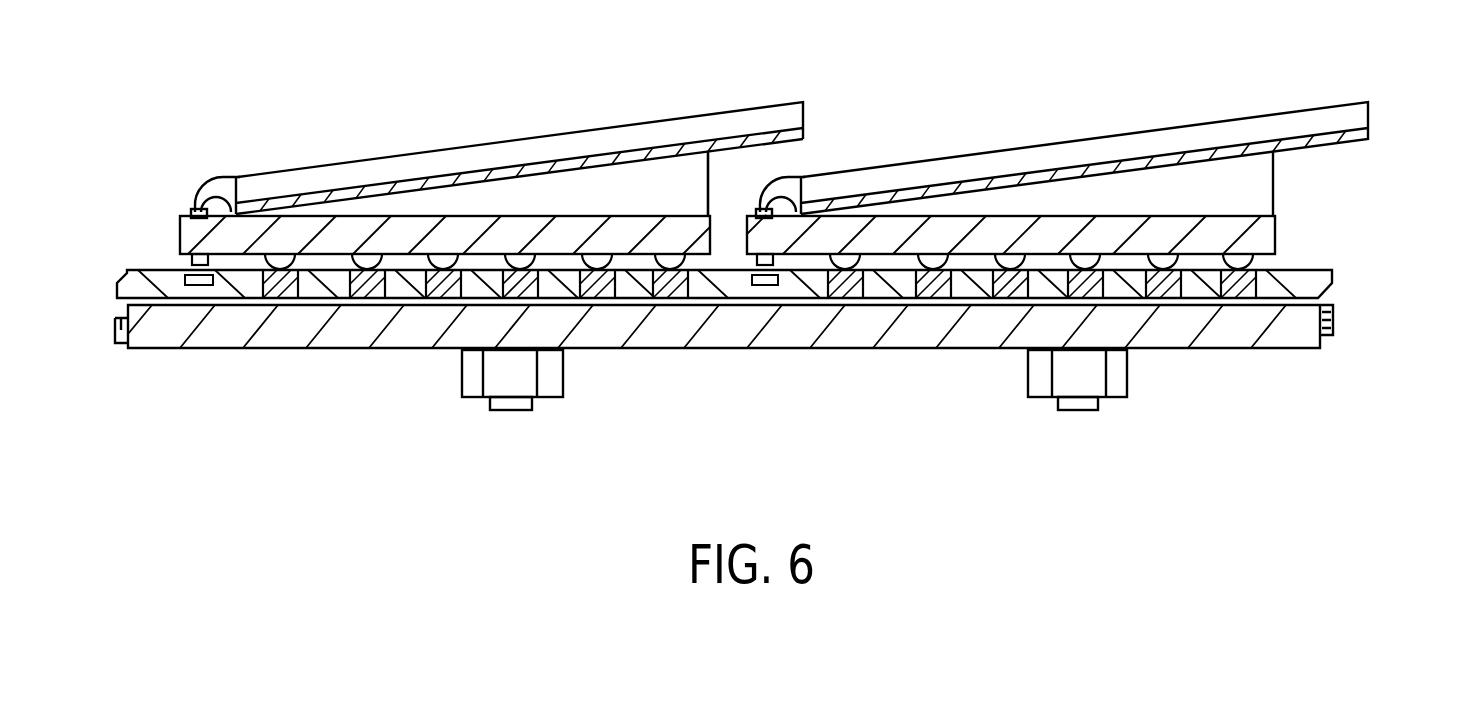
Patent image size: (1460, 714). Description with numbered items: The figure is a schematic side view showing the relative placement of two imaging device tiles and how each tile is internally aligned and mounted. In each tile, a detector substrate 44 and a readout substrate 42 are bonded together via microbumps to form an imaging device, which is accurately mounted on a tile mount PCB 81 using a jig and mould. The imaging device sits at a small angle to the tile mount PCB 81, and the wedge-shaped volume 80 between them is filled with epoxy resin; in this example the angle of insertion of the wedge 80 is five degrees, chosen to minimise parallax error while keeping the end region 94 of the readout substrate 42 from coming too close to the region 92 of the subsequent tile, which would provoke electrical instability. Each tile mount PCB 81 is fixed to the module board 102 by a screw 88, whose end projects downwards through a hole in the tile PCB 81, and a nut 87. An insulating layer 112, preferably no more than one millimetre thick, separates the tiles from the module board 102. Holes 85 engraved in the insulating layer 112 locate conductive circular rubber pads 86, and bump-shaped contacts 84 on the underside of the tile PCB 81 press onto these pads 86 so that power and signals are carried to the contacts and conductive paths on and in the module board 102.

The readout substrate 42 is at (443, 182).
The detector substrate 44 is at (311, 178).
The volume between imaging device and tile mount (wedge) 80 is at (516, 197).
The tile mount PCB 81 is at (590, 238).
The bump-shaped contacts 84 is at (1247, 253).
The holes 85 is at (860, 285).
The conductive rubber pads 86 is at (925, 285).
The nuts 87 is at (553, 384).
The screw 88 is at (520, 408).
The region of a subsequent tile 92 is at (248, 152).
The region of the readout substrate 94 is at (804, 93).
The module board 102 is at (1298, 333).
The insulating layer 112 is at (1333, 281).